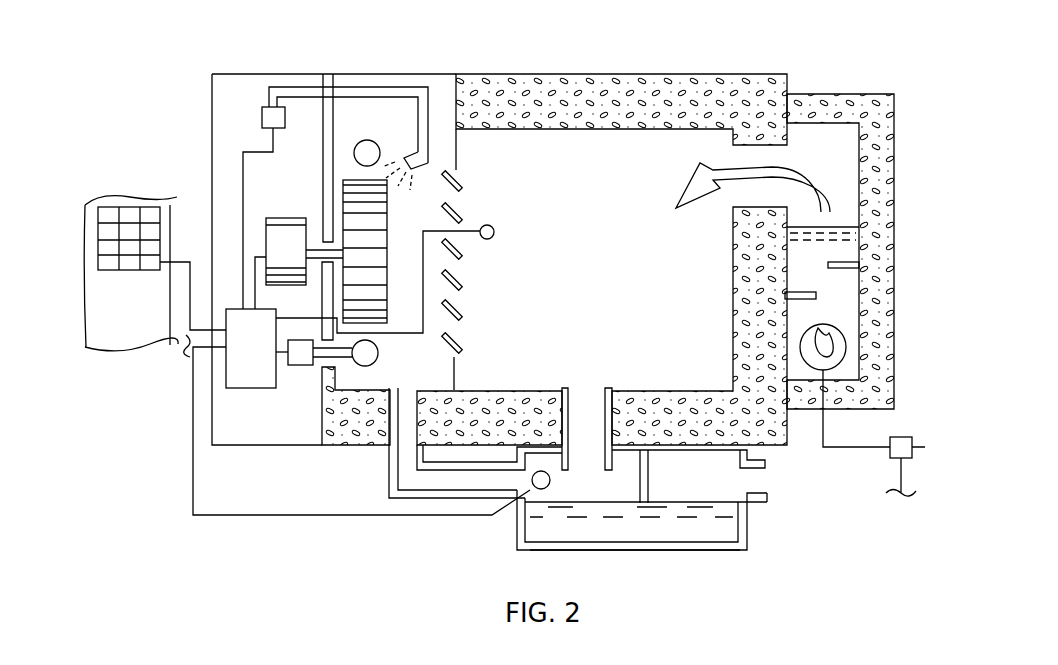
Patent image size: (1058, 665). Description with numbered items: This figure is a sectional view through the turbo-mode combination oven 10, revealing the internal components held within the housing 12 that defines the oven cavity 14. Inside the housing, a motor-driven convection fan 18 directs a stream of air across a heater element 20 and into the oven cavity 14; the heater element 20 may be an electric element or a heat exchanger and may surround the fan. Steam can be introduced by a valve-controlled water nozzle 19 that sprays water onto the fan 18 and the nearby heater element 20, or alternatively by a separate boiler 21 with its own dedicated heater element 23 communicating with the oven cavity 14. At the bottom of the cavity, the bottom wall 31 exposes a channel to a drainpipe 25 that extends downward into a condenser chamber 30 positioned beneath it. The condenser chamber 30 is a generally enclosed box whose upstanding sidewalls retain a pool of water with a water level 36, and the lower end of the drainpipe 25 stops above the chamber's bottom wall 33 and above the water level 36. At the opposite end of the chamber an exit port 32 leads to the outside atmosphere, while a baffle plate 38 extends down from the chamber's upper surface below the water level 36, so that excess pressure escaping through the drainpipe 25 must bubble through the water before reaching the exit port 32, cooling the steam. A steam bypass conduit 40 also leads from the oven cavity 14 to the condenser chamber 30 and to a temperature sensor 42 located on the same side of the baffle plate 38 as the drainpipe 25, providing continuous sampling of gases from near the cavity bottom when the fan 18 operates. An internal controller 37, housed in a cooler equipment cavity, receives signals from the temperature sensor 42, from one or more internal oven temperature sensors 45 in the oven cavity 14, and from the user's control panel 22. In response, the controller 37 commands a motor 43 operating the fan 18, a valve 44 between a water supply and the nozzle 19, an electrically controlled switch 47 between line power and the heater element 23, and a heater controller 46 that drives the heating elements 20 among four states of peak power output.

The turbo-mode combination oven 10 is at (222, 50).
The housing 12 is at (510, 74).
The oven cavity 14 is at (622, 261).
The convection fan 18 is at (362, 230).
The water nozzle 19 is at (410, 152).
The heater element 20 is at (366, 140).
The boiler 21 is at (858, 160).
The control panel 22 is at (125, 272).
The heater element 23 is at (833, 340).
The drainpipe 25 is at (603, 407).
The condenser chamber 30 is at (730, 550).
The bottom wall 31 is at (490, 389).
The exit port 32 is at (768, 490).
The bottom wall 33 is at (645, 550).
The water level 36 is at (677, 493).
The internal controller 37 is at (235, 360).
The baffle plate 38 is at (637, 485).
The steam bypass conduit 40 is at (413, 480).
The temperature sensor 42 is at (538, 489).
The motor 43 is at (280, 218).
The valve 44 is at (262, 115).
The internal oven temperature sensor 45 is at (495, 230).
The heater controller 46 is at (300, 365).
The electrically controlled switch 47 is at (903, 435).